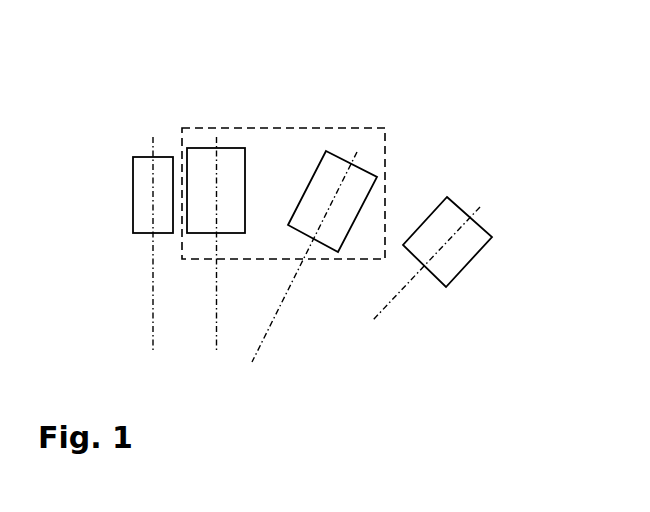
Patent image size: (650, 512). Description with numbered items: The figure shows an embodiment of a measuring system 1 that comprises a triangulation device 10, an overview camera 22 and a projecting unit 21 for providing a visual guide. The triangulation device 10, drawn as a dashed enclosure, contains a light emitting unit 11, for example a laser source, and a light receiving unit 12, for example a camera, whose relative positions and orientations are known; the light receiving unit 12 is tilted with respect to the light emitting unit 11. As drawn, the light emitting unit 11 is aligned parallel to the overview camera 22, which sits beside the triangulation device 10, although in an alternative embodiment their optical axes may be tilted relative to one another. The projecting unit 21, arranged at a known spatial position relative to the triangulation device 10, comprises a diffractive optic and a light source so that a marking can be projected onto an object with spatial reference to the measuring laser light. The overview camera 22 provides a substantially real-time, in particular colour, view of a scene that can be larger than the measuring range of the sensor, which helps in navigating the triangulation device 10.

The measuring system 1 is at (429, 38).
The triangulation device 10 is at (283, 166).
The light emitting unit 11 is at (186, 214).
The light receiving unit 12 is at (348, 228).
The projecting unit 21 is at (453, 237).
The overview camera 22 is at (114, 243).